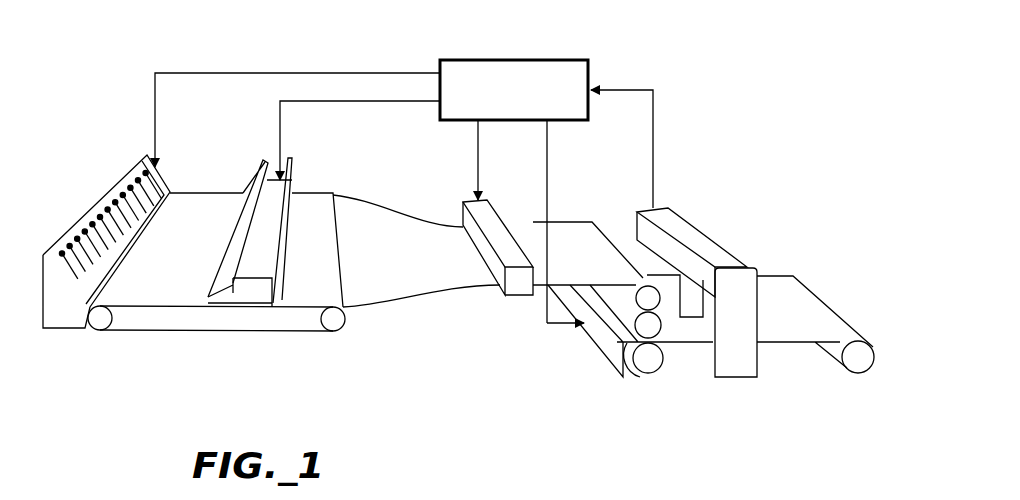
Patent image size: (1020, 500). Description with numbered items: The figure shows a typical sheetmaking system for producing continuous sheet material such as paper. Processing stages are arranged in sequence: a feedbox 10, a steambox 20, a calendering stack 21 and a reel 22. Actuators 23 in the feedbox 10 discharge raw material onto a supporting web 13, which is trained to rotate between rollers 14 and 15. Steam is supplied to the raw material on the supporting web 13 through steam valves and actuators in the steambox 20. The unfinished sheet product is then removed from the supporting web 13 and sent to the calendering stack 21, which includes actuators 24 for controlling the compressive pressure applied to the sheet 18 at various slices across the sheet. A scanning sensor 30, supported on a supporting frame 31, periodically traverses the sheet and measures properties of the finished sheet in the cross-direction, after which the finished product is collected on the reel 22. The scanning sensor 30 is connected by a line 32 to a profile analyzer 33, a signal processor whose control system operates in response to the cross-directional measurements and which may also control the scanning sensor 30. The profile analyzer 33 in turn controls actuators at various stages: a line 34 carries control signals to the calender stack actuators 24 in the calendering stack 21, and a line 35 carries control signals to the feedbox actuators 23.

The feedbox 10 is at (61, 322).
The supporting web 13 is at (214, 327).
The roller 14 is at (100, 325).
The roller 15 is at (337, 328).
The sheet 18 is at (772, 287).
The steambox 20 is at (268, 162).
The calendering stack 21 is at (644, 380).
The reel 22 is at (862, 368).
The actuators 23 is at (112, 188).
The actuators 24 is at (600, 345).
The scanning sensor 30 is at (686, 302).
The supporting frame 31 is at (695, 232).
The line 32 is at (653, 160).
The profile analyzer 33 is at (565, 60).
The line 34 is at (547, 185).
The line 35 is at (290, 73).